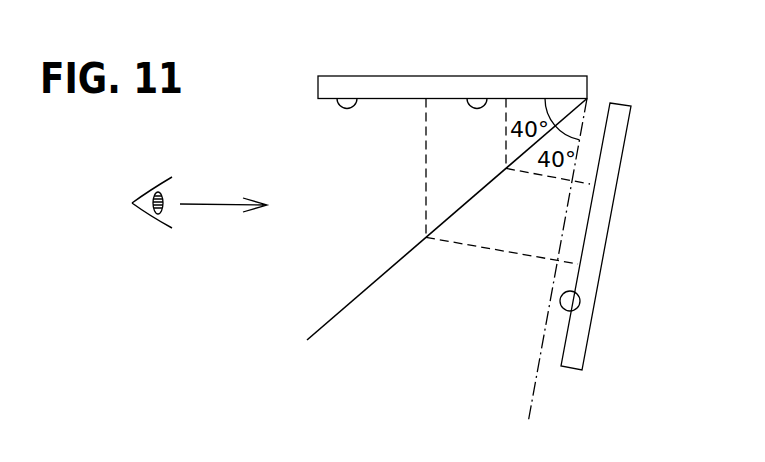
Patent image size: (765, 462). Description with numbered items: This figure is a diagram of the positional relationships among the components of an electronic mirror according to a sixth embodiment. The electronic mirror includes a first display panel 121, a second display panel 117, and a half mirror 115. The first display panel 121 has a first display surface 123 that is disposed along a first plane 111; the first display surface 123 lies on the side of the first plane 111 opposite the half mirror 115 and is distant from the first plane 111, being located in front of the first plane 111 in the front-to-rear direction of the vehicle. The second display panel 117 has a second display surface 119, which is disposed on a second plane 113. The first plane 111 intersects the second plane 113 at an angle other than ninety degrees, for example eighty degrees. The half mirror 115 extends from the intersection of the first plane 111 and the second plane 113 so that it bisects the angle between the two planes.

The first plane 111 is at (536, 383).
The second plane 113 is at (357, 98).
The half mirror 115 is at (358, 298).
The second display panel 117 is at (404, 90).
The second display surface 119 is at (484, 98).
The first display panel 121 is at (607, 205).
The first display surface 123 is at (577, 306).